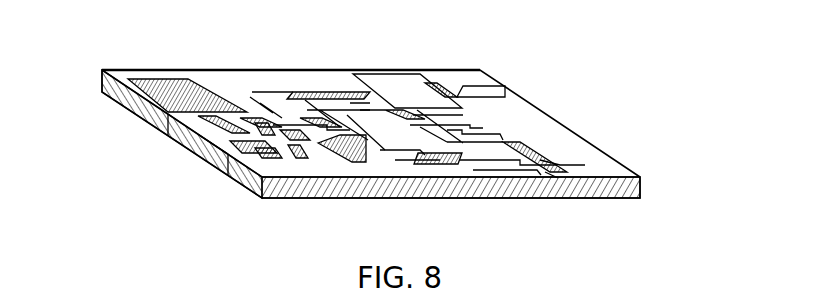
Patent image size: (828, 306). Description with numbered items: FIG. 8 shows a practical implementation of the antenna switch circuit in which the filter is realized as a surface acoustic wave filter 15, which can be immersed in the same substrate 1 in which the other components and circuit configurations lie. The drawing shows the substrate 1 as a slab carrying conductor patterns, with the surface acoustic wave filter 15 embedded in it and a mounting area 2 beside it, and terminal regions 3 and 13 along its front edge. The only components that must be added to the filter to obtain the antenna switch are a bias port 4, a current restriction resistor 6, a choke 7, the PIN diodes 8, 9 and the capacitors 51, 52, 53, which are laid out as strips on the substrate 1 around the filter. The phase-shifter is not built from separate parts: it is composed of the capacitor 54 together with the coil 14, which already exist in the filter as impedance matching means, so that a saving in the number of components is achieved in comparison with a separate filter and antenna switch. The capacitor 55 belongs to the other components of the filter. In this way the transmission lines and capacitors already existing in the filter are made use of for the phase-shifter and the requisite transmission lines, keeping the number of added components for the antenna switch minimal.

The circuit board / substrate 1 is at (156, 73).
The component mounting pad 2 is at (474, 90).
The ground conductor 3 is at (517, 182).
The bias port 4 is at (313, 177).
The current restriction resistor 6 is at (228, 171).
The choke 7 is at (199, 150).
The PIN diode 8 is at (280, 122).
The PIN diode 9 is at (457, 123).
The conductor line 13 is at (395, 160).
The coil 14 is at (334, 89).
The SAW filter 15 is at (385, 72).
The capacitor 51 is at (330, 165).
The capacitor 52 is at (167, 126).
The capacitor 53 is at (550, 180).
The capacitor 54 is at (362, 157).
The capacitor 55 is at (300, 93).